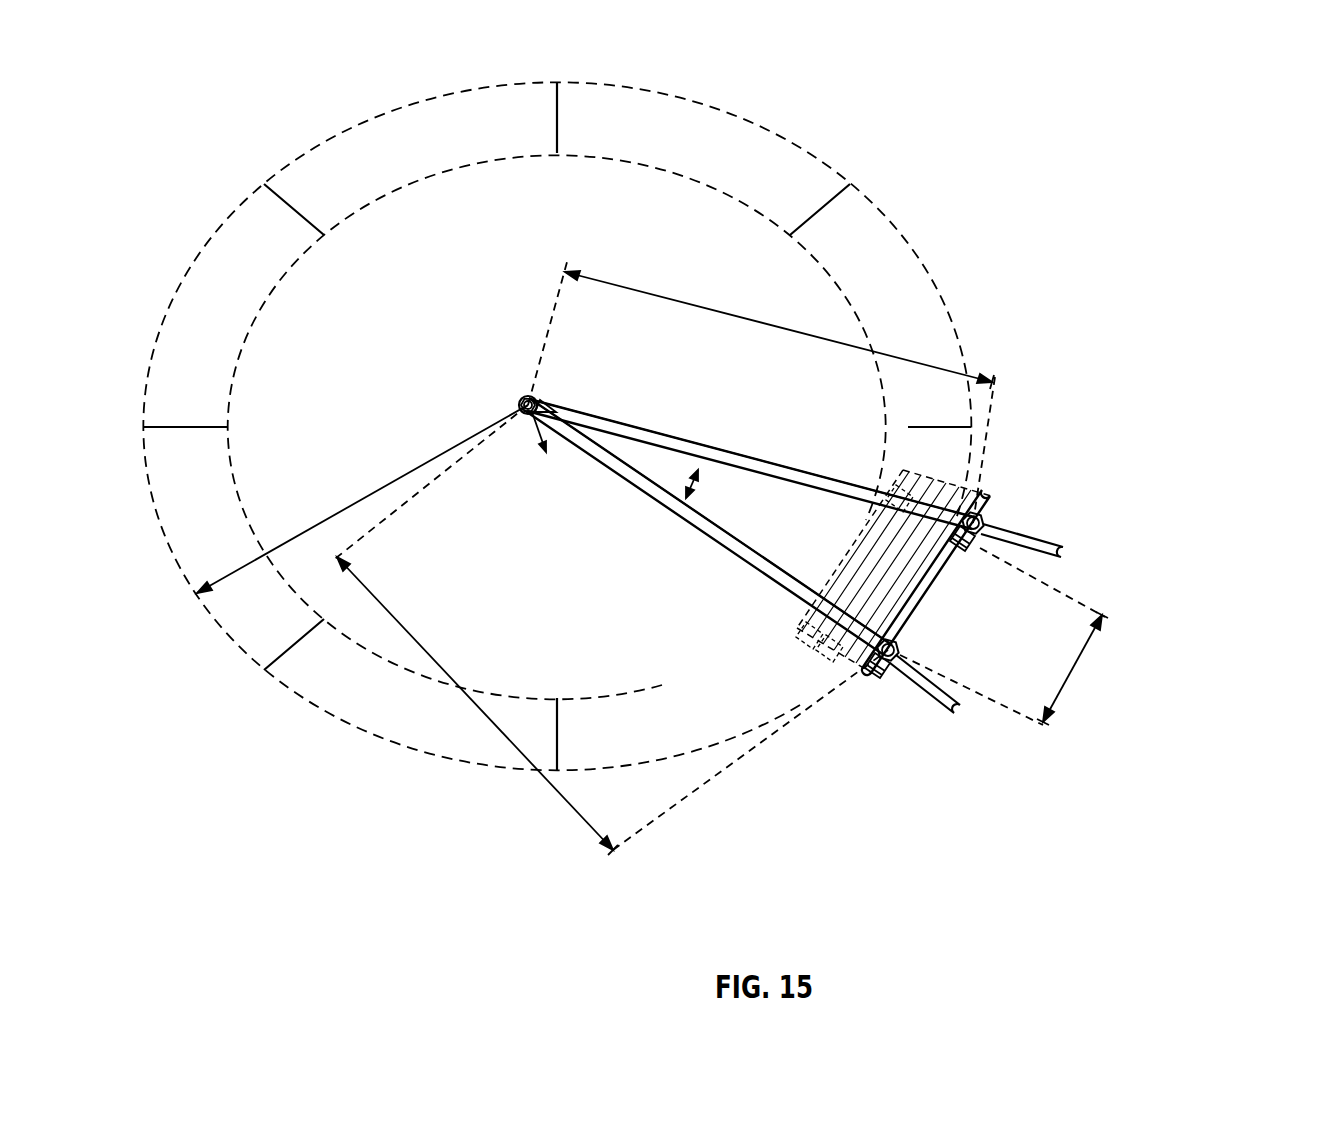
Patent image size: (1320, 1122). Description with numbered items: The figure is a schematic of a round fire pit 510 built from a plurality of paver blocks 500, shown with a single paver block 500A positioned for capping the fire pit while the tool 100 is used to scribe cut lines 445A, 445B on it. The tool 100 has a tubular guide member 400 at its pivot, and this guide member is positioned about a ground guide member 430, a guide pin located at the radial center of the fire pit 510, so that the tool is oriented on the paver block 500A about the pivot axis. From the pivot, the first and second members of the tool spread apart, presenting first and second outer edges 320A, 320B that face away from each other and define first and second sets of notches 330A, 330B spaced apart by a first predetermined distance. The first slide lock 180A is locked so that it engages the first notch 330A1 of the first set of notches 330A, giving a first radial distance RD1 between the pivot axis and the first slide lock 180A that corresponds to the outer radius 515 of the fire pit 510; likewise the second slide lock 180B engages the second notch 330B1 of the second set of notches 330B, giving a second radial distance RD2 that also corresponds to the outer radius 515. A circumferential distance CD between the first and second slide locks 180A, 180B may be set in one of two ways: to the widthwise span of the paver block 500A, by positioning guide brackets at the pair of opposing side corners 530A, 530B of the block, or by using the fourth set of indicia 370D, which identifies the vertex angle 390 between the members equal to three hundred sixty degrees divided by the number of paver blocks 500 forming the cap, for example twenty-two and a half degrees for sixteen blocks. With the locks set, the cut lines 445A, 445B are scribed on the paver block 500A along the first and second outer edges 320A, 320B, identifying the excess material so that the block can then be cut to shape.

The tool 100 is at (953, 712).
The first slide lock 180A is at (892, 673).
The second slide lock 180B is at (985, 525).
The first outer edge 320A is at (760, 573).
The second outer edge 320B is at (810, 470).
The first set of notches 330A is at (700, 522).
The first notch 330A1 is at (870, 673).
The second set of notches 330B is at (700, 455).
The second notch 330B1 is at (993, 493).
The fourth set of indicia 370D is at (582, 440).
The vertex angle 390 is at (695, 483).
The tubular guide member 400 is at (528, 400).
The ground guide member 430 is at (523, 400).
The first cut line 445A is at (830, 637).
The second cut line 445B is at (903, 502).
The paver blocks 500 is at (462, 717).
The paver block 500A is at (917, 575).
The fire pit 510 is at (337, 716).
The outer radius 515 is at (232, 573).
The first side corner 530A is at (877, 682).
The second side corner 530B is at (983, 497).
The first radial distance RD1 is at (443, 672).
The second radial distance RD2 is at (778, 322).
The circumferential distance CD is at (1075, 670).